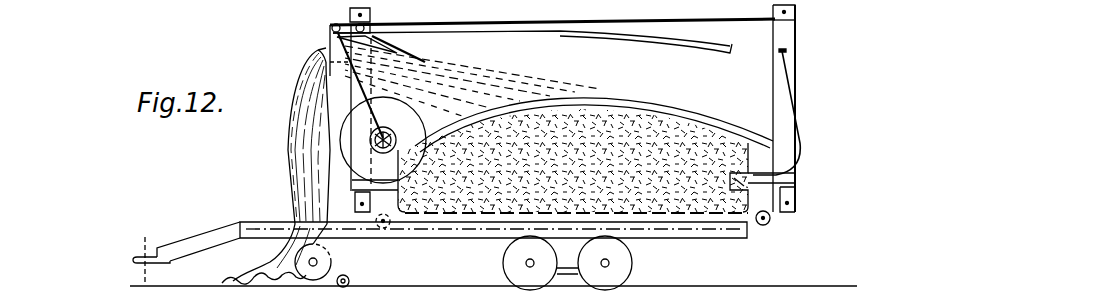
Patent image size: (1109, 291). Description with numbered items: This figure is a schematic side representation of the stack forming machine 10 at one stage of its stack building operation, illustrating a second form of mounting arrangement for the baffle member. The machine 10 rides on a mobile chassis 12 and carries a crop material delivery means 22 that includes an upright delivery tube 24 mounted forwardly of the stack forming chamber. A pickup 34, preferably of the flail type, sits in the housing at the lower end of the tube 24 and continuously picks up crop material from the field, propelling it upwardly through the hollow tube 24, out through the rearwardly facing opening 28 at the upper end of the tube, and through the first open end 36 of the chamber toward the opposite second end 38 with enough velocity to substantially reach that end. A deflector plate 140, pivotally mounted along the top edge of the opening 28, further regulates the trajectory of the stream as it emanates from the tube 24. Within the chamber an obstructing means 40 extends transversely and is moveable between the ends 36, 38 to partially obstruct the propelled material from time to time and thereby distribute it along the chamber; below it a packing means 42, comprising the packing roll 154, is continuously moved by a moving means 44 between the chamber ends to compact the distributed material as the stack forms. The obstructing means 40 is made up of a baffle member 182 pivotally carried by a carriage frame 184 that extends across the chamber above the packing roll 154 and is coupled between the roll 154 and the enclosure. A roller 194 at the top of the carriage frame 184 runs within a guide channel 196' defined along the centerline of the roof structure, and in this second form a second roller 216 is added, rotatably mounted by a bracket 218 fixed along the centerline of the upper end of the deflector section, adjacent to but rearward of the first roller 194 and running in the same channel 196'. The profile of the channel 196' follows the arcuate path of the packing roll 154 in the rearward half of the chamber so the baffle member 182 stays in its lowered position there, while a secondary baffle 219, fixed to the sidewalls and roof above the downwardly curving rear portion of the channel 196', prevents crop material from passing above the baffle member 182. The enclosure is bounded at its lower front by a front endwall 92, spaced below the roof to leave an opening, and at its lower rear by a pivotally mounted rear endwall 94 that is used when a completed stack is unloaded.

The machine 10 is at (831, 66).
The mobile chassis 12 is at (666, 250).
The crop material delivery means 22 is at (283, 172).
The upright delivery tube 24 is at (290, 187).
The opening 28 is at (323, 61).
The pickup 34 is at (332, 249).
The first open end 36 is at (342, 103).
The second end 38 is at (801, 88).
The obstructing means 40 is at (433, 55).
The packing means 42 is at (418, 103).
The moving means 44 is at (486, 178).
The front endwall 92 is at (372, 187).
The rear endwall 94 is at (791, 197).
The deflector plate 140 is at (318, 58).
The packing roll 154 is at (343, 115).
The baffle member 182 is at (430, 23).
The carriage frame 184 is at (334, 37).
The roller 194 is at (331, 26).
The guide channel 196' is at (531, 51).
The second roller 216 is at (350, 16).
The bracket 218 is at (373, 27).
The secondary baffle 219 is at (718, 38).